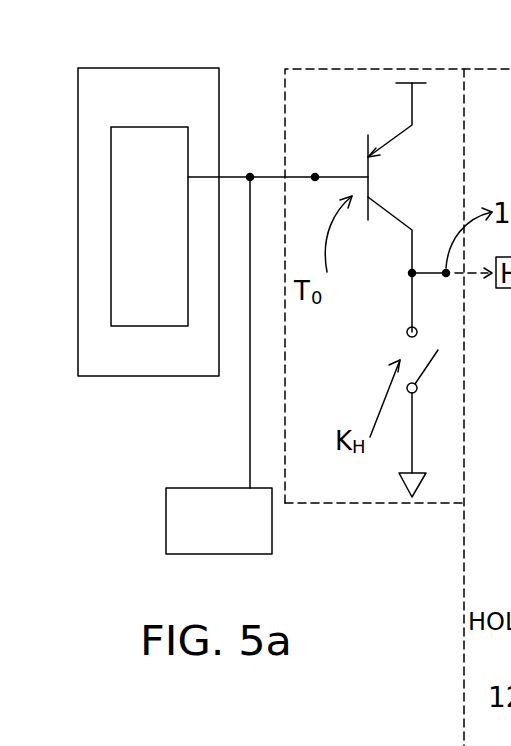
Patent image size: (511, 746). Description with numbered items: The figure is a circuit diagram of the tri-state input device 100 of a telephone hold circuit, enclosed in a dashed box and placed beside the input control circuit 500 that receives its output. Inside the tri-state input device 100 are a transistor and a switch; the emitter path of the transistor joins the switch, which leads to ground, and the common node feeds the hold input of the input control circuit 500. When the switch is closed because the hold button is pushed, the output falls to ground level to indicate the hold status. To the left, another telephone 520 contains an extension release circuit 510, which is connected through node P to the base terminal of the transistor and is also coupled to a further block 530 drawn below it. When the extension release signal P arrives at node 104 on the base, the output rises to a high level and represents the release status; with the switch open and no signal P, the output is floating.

The tri-state input device 100 is at (352, 109).
The connection node 104 is at (315, 176).
The input control circuit 500 is at (464, 708).
The extension release circuit 510 is at (120, 327).
The another telephone 520 is at (160, 376).
The control unit 530 is at (272, 527).